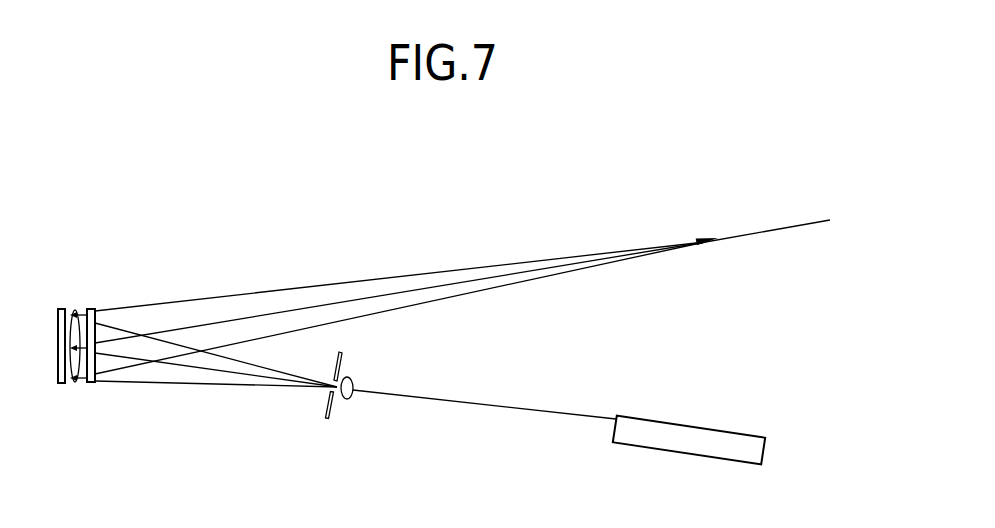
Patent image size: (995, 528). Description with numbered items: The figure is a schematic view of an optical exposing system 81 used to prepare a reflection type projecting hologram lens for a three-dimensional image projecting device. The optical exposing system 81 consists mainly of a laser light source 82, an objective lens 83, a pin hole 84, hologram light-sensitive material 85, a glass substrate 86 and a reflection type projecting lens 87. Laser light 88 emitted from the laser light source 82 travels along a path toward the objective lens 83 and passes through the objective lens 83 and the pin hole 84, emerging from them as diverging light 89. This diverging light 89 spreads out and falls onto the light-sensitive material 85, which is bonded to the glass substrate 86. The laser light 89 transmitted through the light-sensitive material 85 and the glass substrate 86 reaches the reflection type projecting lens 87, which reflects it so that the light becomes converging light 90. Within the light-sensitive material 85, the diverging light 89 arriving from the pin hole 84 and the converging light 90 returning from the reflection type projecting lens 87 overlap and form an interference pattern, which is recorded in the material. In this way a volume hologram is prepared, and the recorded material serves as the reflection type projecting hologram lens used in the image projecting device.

The optical exposing system 81 is at (579, 168).
The laser light source 82 is at (702, 433).
The objective lens 83 is at (352, 380).
The pin hole 84 is at (334, 420).
The hologram light-sensitive material 85 is at (96, 316).
The glass substrate 86 is at (89, 386).
The reflection type projecting lens 87 is at (62, 309).
The laser light 88 is at (492, 410).
The diverging light 89 is at (255, 352).
The converging light 90 is at (471, 304).